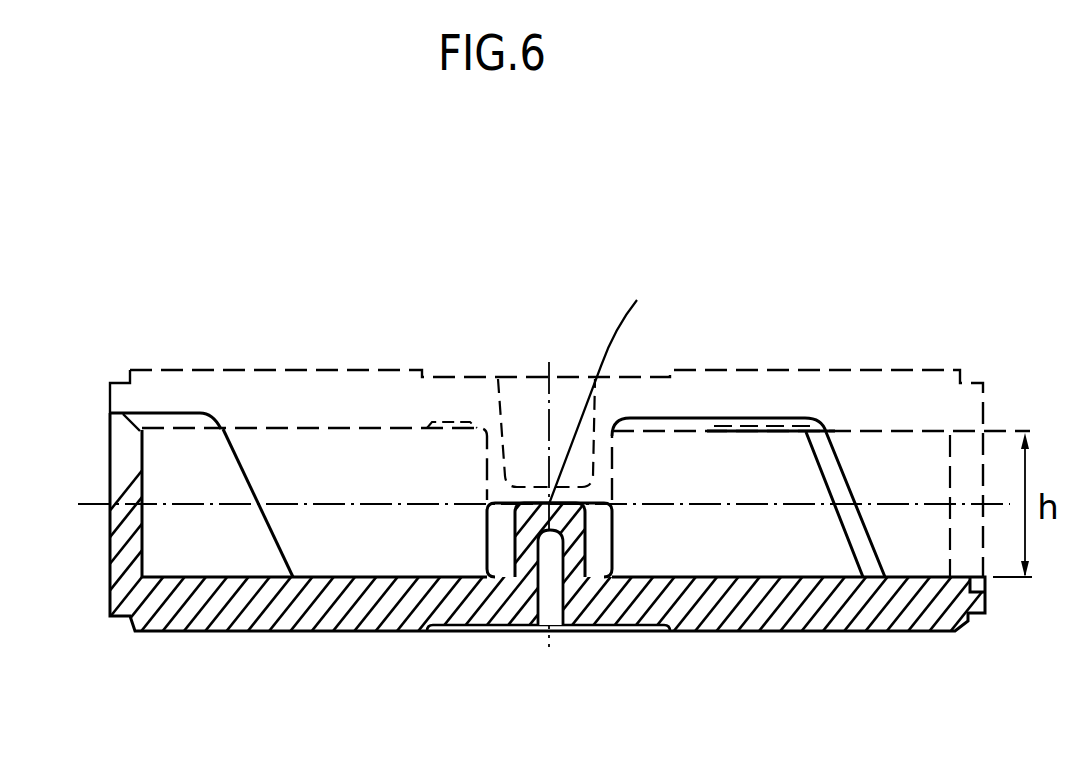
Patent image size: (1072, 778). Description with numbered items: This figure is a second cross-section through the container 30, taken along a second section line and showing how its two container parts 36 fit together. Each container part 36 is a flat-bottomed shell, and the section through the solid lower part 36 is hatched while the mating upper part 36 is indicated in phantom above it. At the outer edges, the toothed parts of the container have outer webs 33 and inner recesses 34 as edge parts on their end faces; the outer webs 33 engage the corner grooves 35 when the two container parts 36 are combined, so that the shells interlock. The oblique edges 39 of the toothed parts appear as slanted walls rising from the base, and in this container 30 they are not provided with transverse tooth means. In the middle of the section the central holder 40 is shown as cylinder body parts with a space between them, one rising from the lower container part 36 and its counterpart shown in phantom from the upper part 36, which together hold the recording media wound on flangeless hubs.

The container 30 is at (465, 367).
The outer webs 33 is at (109, 413).
The inner recesses 34 is at (169, 413).
The corner grooves 35 is at (988, 580).
The container parts 36 is at (332, 395).
The oblique edges 39 is at (254, 483).
The central holder 40 is at (527, 417).